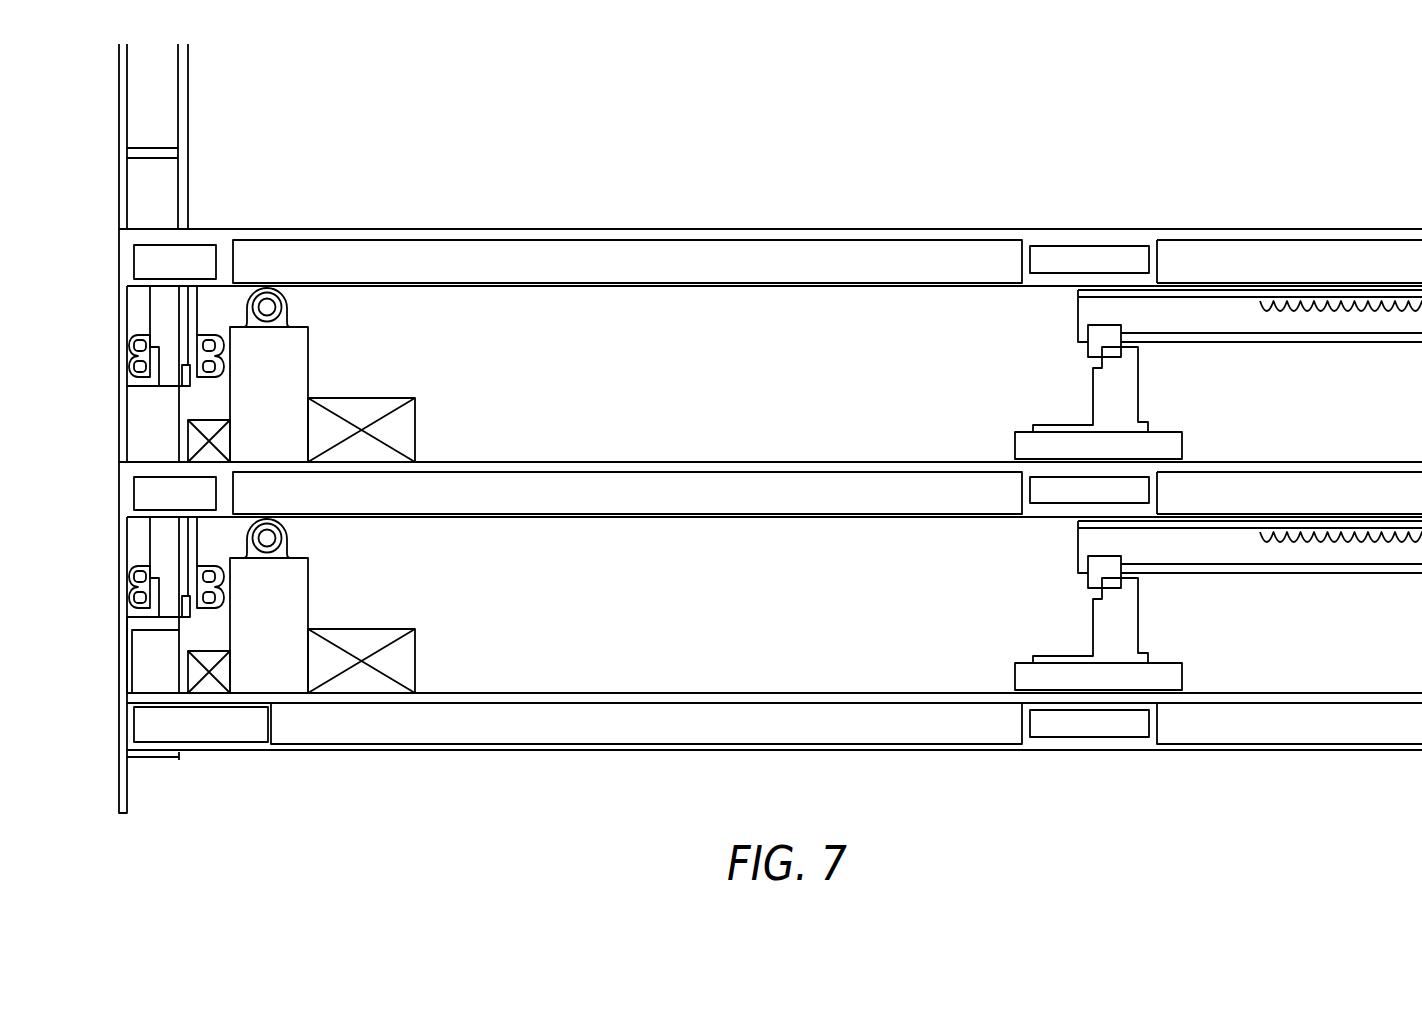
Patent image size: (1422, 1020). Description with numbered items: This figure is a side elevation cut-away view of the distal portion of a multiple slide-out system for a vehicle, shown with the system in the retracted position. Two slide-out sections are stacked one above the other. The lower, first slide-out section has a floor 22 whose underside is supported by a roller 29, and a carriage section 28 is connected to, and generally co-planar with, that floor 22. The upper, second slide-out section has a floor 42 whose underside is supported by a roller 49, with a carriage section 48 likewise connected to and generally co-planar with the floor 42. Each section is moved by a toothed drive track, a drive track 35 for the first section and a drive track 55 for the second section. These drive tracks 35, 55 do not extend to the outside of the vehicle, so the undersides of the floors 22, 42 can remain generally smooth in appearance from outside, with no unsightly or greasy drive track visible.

The floor 22 is at (720, 460).
The carriage section 28 is at (1312, 459).
The roller 29 is at (287, 532).
The drive track 35 is at (1353, 528).
The floor 42 is at (563, 228).
The carriage section 48 is at (1325, 235).
The roller 49 is at (287, 301).
The drive track 55 is at (1343, 298).